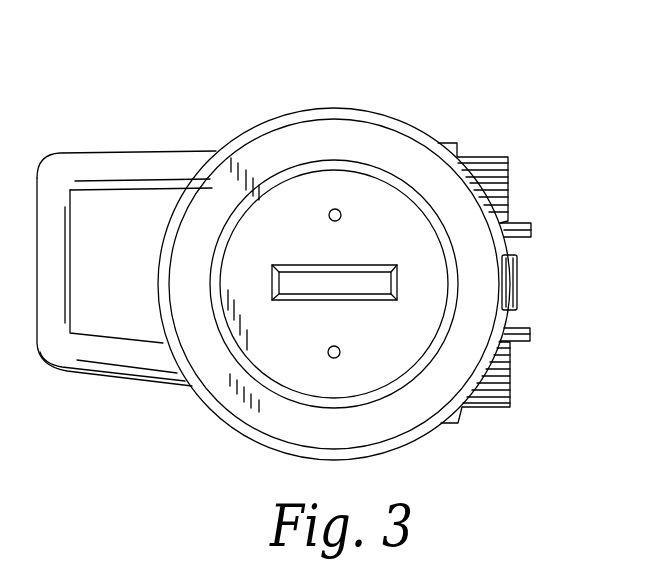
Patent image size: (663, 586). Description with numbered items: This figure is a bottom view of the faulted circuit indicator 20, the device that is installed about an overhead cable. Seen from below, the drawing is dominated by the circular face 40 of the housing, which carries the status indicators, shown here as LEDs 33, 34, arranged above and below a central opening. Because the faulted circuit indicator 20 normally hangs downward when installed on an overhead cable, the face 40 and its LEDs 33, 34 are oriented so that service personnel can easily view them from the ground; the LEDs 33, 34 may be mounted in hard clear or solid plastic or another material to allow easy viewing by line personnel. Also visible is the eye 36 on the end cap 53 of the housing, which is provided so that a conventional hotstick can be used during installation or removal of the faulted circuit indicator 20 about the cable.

The faulted circuit indicator 20 is at (423, 100).
The face 40 is at (283, 192).
The LED 33 is at (342, 216).
The LED 34 is at (340, 349).
The eye 36 is at (397, 279).
The end cap 53 is at (478, 295).